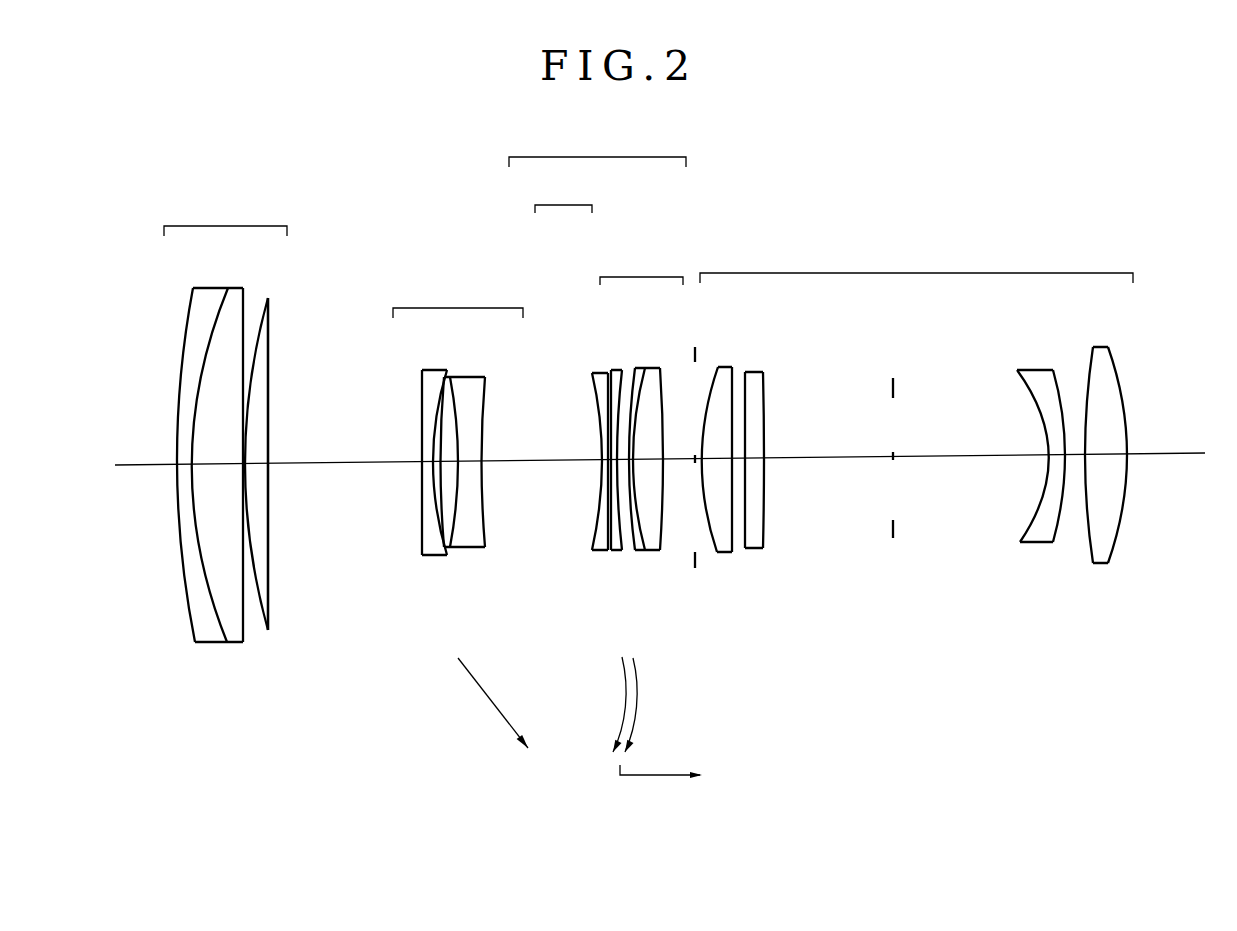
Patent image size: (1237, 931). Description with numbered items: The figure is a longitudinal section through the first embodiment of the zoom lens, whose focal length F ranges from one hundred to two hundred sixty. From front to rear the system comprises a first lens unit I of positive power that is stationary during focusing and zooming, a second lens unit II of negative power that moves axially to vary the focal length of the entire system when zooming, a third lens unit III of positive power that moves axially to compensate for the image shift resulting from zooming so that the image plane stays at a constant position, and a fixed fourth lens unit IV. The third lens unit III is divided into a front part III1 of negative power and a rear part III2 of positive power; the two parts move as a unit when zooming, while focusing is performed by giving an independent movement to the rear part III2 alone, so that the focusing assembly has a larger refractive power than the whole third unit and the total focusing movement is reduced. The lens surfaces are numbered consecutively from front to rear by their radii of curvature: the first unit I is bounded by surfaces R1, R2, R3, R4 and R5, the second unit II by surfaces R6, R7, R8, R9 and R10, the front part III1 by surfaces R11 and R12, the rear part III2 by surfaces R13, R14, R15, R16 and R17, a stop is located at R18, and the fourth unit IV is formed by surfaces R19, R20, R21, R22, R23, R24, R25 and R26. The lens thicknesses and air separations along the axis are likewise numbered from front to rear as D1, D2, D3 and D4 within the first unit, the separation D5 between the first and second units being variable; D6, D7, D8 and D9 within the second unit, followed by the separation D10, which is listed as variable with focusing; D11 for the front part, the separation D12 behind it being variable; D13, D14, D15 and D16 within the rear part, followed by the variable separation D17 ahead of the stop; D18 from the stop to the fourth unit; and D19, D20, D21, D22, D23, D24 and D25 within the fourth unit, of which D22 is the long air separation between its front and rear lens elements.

The first lens unit I is at (172, 226).
The second lens unit II is at (405, 308).
The third lens unit III is at (546, 157).
The front part of third lens unit III1 is at (537, 203).
The rear part of third lens unit III2 is at (683, 277).
The fourth lens unit IV is at (823, 273).
The focal length F is at (661, 761).
The radius of curvature of first surface R1 is at (192, 292).
The radius of curvature of second surface R2 is at (218, 300).
The radius of curvature of third surface R3 is at (241, 300).
The radius of curvature of fourth surface R4 is at (262, 308).
The radius of curvature of fifth surface R5 is at (270, 305).
The radius of curvature of sixth surface R6 is at (421, 372).
The radius of curvature of seventh surface R7 is at (444, 372).
The radius of curvature of eighth surface R8 is at (446, 378).
The radius of curvature of ninth surface R9 is at (462, 380).
The radius of curvature of tenth surface R10 is at (485, 378).
The radius of curvature of eleventh surface R11 is at (592, 374).
The radius of curvature of twelfth surface R12 is at (609, 372).
The radius of curvature of thirteenth surface R13 is at (612, 370).
The radius of curvature of fourteenth surface R14 is at (622, 370).
The radius of curvature of fifteenth surface R15 is at (635, 368).
The radius of curvature of sixteenth surface R16 is at (645, 368).
The radius of curvature of seventeenth surface R17 is at (661, 368).
The stop R18 is at (693, 355).
The radius of curvature of nineteenth surface R19 is at (718, 367).
The radius of curvature of twentieth surface R20 is at (732, 367).
The radius of curvature of twenty-first surface R21 is at (745, 372).
The radius of curvature of twenty-second surface R22 is at (763, 372).
The radius of curvature of twenty-third surface R23 is at (1020, 372).
The radius of curvature of twenty-fourth surface R24 is at (1052, 372).
The radius of curvature of twenty-fifth surface R25 is at (1092, 349).
The radius of curvature of twenty-sixth surface R26 is at (1110, 349).
The first lens thickness D1 is at (185, 466).
The second lens thickness D2 is at (220, 466).
The third air separation D3 is at (241, 470).
The fourth lens thickness D4 is at (257, 466).
The fifth air separation D5 is at (340, 463).
The sixth lens thickness D6 is at (424, 556).
The seventh air separation D7 is at (441, 550).
The eighth lens thickness D8 is at (458, 548).
The ninth lens thickness D9 is at (478, 548).
The tenth air separation D10 is at (537, 462).
The eleventh lens thickness D11 is at (596, 551).
The twelfth air separation D12 is at (612, 551).
The thirteenth lens thickness D13 is at (620, 551).
The fourteenth air separation D14 is at (634, 551).
The fifteenth lens thickness D15 is at (646, 551).
The sixteenth lens thickness D16 is at (664, 551).
The seventeenth air separation D17 is at (681, 462).
The eighteenth air separation D18 is at (702, 462).
The nineteenth lens thickness D19 is at (718, 553).
The twentieth air separation D20 is at (738, 549).
The twenty-first lens thickness D21 is at (755, 549).
The twenty-second air separation D22 is at (883, 458).
The twenty-third lens thickness D23 is at (1052, 457).
The twenty-fourth air separation D24 is at (1077, 457).
The twenty-fifth lens thickness D25 is at (1105, 457).